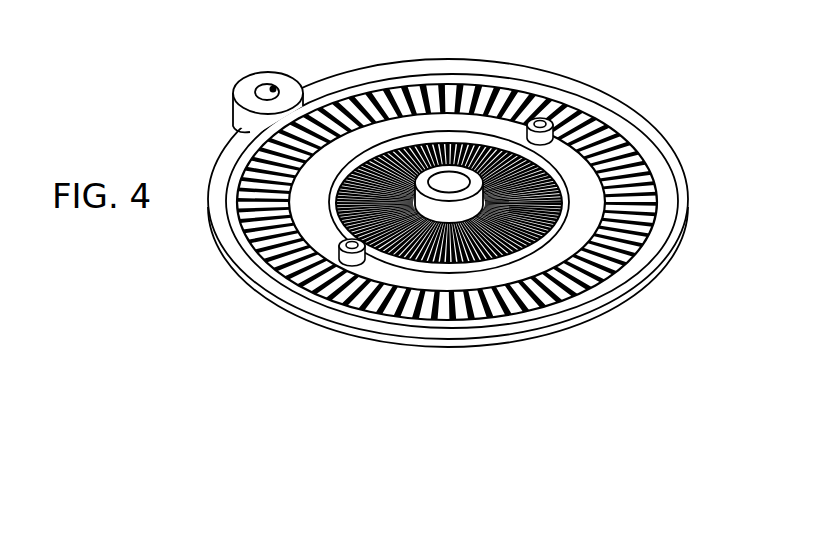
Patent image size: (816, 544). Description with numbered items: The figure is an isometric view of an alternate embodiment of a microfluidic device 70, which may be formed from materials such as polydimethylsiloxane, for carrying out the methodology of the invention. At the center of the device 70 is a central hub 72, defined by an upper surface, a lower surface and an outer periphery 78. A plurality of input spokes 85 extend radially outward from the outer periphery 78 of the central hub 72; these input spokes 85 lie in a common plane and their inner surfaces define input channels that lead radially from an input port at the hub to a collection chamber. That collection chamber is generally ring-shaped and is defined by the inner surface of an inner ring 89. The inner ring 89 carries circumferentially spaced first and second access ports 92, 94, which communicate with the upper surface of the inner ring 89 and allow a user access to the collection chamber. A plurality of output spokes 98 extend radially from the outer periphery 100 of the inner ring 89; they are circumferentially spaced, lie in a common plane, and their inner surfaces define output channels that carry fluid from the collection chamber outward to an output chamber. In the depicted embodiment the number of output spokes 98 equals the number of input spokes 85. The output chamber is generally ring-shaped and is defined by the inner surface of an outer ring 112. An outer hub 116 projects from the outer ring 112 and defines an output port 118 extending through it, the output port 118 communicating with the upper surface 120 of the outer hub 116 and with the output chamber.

The microfluidic device 70 is at (350, 353).
The central hub 72 is at (463, 213).
The outer periphery 78 is at (438, 214).
The input spokes 85 is at (413, 143).
The inner ring 89 is at (625, 285).
The first access port 92 is at (347, 260).
The second access port 94 is at (538, 118).
The output spokes 98 is at (605, 128).
The outer periphery 100 is at (277, 267).
The outer ring 112 is at (410, 343).
The outer hub 116 is at (247, 68).
The output port 118 is at (275, 90).
The upper surface 120 is at (243, 91).